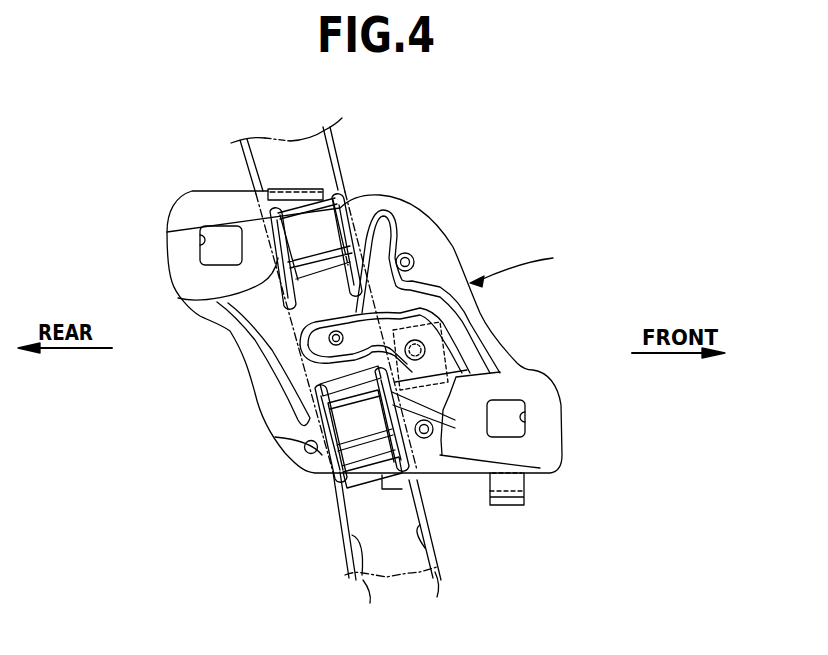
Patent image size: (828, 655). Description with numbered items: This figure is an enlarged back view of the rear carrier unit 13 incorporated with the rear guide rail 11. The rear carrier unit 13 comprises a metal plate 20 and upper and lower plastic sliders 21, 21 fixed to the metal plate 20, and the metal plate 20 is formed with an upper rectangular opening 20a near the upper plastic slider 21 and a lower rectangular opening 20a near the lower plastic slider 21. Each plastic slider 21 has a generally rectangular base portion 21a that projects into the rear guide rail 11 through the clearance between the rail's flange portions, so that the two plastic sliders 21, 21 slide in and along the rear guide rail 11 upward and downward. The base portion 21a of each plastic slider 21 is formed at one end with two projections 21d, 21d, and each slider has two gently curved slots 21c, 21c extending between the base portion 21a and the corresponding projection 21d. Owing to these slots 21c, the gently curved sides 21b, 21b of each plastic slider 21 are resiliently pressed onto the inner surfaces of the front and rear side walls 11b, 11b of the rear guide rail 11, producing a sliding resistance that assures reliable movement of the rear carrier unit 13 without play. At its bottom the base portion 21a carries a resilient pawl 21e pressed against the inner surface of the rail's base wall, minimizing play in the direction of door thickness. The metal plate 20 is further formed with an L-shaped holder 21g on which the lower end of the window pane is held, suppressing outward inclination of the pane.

The rear guide rail 11 is at (340, 130).
The front and rear side walls 11b is at (396, 550).
The rear carrier unit 13 is at (588, 272).
The metal plate 20 is at (430, 228).
The rectangular opening 20a is at (203, 243).
The plastic slider 21 is at (316, 190).
The base portion 21a is at (268, 188).
The sides of the plastic slider 21b is at (328, 218).
The gently curved slot 21c is at (273, 233).
The projection 21d is at (320, 381).
The resilient pawl 21e is at (325, 210).
The L-shaped holder 21g is at (518, 505).